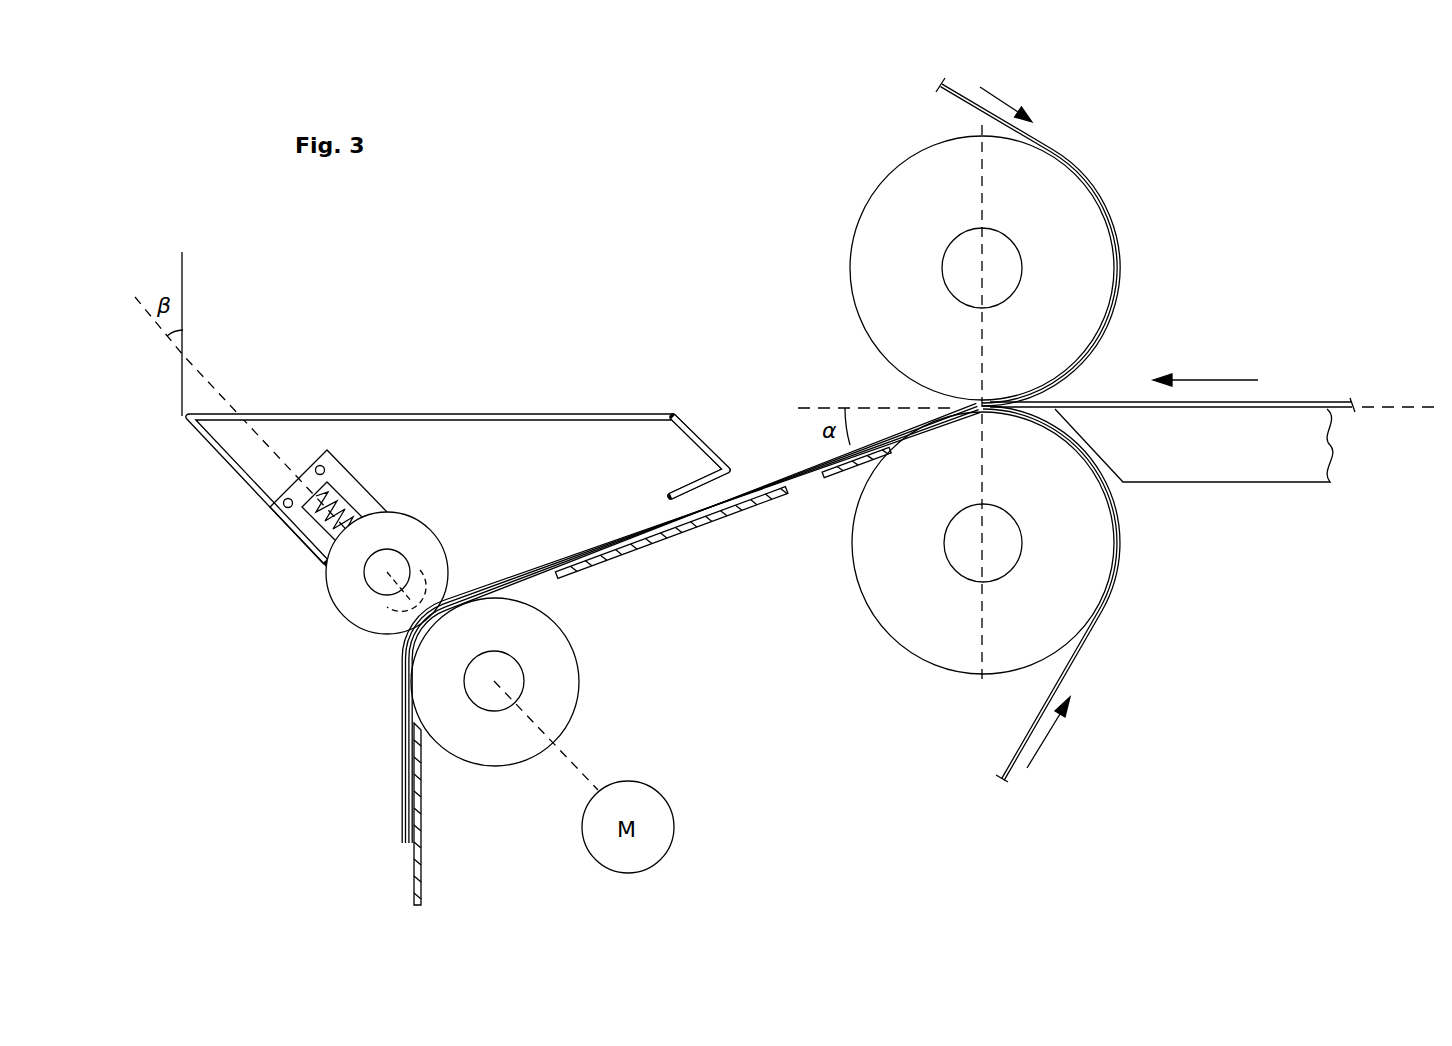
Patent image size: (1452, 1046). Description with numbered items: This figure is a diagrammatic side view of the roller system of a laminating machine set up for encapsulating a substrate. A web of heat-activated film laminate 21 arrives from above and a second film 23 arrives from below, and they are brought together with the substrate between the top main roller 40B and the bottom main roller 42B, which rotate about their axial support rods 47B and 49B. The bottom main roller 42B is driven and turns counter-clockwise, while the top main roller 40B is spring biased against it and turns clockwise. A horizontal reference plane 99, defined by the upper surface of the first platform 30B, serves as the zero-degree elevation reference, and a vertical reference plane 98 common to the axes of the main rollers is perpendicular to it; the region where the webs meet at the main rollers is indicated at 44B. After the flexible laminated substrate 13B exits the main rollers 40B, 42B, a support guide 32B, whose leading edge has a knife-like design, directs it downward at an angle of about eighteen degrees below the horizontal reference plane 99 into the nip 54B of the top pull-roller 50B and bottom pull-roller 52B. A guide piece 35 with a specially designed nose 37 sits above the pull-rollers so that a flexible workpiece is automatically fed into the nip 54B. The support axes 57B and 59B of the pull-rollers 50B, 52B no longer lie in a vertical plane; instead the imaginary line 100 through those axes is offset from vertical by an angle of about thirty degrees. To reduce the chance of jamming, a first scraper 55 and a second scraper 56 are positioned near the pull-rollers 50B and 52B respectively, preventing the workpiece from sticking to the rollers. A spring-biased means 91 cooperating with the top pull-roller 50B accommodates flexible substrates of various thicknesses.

The heat-activated film laminate 21 is at (957, 85).
The vertical reference plane 98 is at (980, 147).
The top main roller 40B is at (880, 188).
The axial support rod of top main roller 47B is at (945, 263).
The horizontal reference plane 99 is at (808, 396).
The nip 44B is at (1060, 392).
The flexible laminated substrate 13B is at (1287, 398).
The first platform 30B is at (1247, 467).
The axial support rod of bottom main roller 49B is at (937, 548).
The bottom main roller 42B is at (947, 653).
The film 23 is at (1018, 730).
The imaginary line 100 is at (202, 364).
The guide piece 35 is at (528, 412).
The nose 37 is at (728, 452).
The spring-biased means 91 is at (348, 477).
The top pull-roller 50B is at (427, 515).
The nip of pull-rollers 54B is at (453, 582).
The first scraper 55 is at (318, 572).
The support axis of top pull-roller 57B is at (375, 587).
The support axis of bottom pull-roller 59B is at (520, 658).
The bottom pull-roller 52B is at (577, 660).
The support guide 32B is at (680, 530).
The second scraper 56 is at (418, 815).